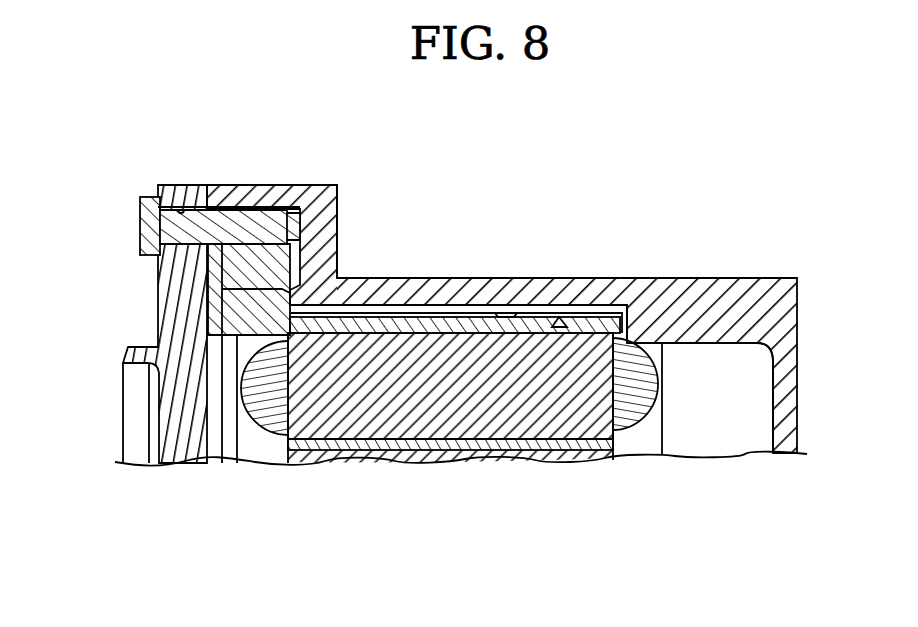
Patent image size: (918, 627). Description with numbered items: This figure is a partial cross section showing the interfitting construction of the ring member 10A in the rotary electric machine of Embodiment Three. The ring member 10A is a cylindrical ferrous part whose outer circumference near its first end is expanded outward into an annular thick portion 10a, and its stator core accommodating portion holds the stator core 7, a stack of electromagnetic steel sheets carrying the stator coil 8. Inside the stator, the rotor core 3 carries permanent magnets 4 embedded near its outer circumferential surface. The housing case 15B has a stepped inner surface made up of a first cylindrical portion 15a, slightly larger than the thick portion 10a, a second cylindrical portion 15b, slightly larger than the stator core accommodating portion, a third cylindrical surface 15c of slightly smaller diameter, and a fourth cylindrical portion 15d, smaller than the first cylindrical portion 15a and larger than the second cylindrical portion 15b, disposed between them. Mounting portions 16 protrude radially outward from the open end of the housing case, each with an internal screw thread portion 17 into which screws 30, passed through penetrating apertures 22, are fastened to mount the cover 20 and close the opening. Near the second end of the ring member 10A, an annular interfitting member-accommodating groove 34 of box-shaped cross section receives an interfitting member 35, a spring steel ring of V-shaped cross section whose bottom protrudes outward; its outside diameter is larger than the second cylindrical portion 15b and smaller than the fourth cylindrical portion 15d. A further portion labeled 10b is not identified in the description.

The rotor core 3 is at (393, 445).
The permanent magnets 4 is at (425, 457).
The stator core 7 is at (587, 414).
The stator coil 8 is at (633, 403).
The ring member 10A is at (352, 317).
The thick portion 10a is at (238, 295).
The outer ring 10b is at (402, 320).
The housing case 15B is at (753, 278).
The first cylindrical portion 15a is at (257, 297).
The second cylindrical portion 15b is at (519, 315).
The third cylindrical surface 15c is at (697, 350).
The fourth cylindrical portion 15d is at (457, 310).
The mounting portions 16 is at (297, 192).
The internal screw thread portion 17 is at (303, 227).
The cover 20 is at (160, 325).
The penetrating apertures 22 is at (178, 208).
The screws 30 is at (155, 229).
The interfitting member-accommodating groove 34 is at (623, 313).
The interfitting member 35 is at (558, 318).